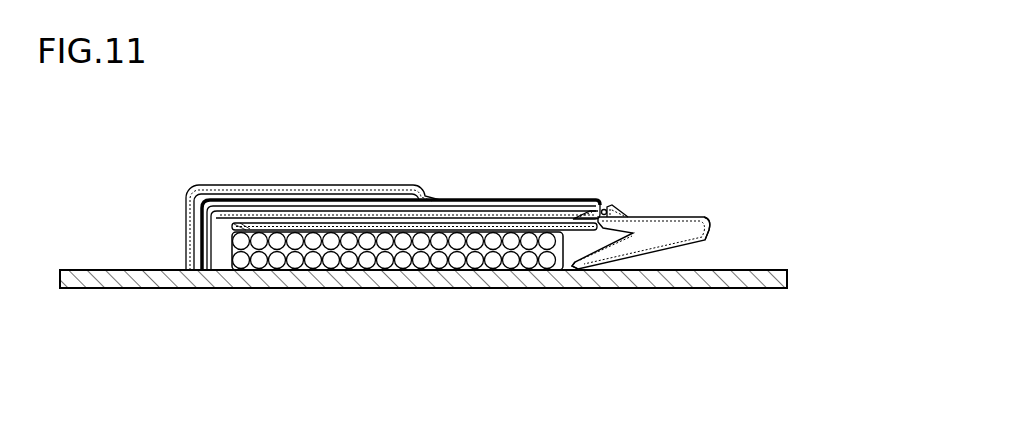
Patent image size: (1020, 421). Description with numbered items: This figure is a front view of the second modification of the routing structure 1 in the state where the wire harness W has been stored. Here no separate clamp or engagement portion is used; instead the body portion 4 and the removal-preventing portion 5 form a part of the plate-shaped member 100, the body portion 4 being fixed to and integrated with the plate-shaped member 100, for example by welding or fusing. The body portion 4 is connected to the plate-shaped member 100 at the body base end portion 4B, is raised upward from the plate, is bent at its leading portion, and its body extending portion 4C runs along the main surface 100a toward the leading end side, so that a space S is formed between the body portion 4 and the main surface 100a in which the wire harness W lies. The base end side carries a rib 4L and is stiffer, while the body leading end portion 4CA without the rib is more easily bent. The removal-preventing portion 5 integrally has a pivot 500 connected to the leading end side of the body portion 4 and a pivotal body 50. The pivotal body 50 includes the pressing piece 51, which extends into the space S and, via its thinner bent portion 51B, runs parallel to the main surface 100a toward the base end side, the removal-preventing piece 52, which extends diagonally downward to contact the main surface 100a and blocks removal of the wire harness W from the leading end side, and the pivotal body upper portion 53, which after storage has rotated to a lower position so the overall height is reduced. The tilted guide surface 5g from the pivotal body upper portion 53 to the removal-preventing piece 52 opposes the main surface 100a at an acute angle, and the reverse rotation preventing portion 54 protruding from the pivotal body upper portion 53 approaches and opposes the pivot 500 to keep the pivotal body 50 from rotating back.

The routing structure 1 is at (586, 77).
The body portion 4 is at (291, 199).
The rib 4L is at (187, 196).
The body base end portion 4B is at (197, 250).
The body extending portion 4C is at (358, 212).
The body leading end portion 4CA is at (522, 212).
The pressing piece 51 is at (448, 218).
The bent portion 51B is at (484, 220).
The pivot 500 is at (605, 209).
The reverse rotation preventing portion 54 is at (620, 210).
The pivotal body upper portion 53 is at (706, 218).
The removal-preventing portion 5 is at (683, 249).
The pivotal body 50 is at (641, 250).
The removal-preventing piece 52 is at (603, 259).
The tilted guide surface 5g is at (646, 243).
The plate-shaped member 100 is at (347, 286).
The main surface 100a is at (781, 269).
The space S is at (219, 252).
The wire harness W is at (427, 269).